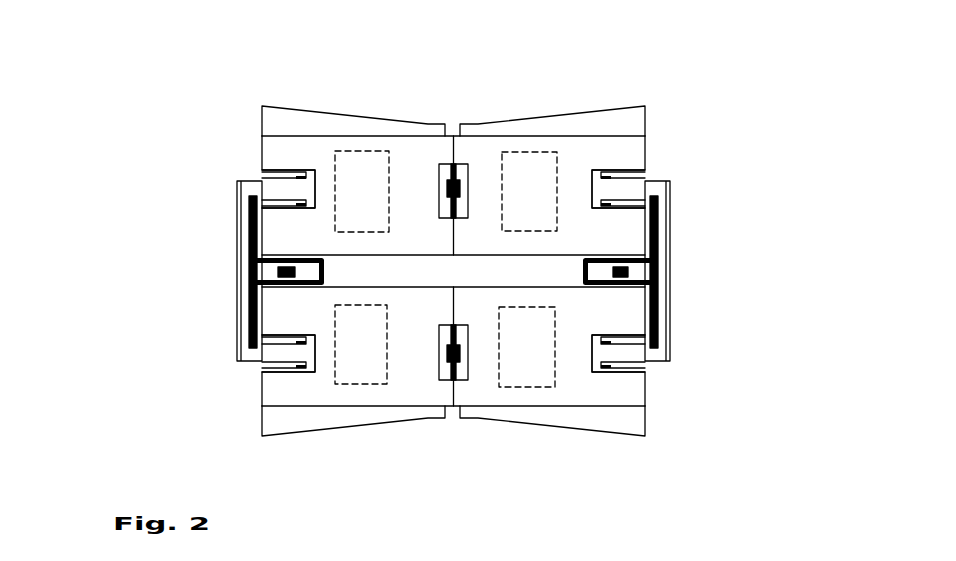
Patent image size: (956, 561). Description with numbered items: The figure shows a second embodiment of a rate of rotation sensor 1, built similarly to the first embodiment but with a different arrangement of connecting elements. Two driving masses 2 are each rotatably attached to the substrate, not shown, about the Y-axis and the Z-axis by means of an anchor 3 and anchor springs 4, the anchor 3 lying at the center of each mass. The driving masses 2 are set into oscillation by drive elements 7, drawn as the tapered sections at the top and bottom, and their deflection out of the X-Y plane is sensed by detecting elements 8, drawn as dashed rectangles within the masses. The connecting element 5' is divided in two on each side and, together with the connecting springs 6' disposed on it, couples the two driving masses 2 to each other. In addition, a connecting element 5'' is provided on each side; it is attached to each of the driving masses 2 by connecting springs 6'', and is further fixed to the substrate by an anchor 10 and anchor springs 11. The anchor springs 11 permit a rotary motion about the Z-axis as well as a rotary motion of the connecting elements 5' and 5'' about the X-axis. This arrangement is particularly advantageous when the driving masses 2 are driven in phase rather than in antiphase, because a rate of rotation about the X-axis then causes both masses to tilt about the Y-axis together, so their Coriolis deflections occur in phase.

The rate of rotation sensor 1 is at (700, 127).
The driving masses 2 is at (683, 472).
The anchor 3 is at (448, 184).
The anchor springs 4 is at (458, 200).
The connecting element 5' is at (437, 271).
The additional connecting element 5'' is at (450, 280).
The connecting springs 6' is at (446, 266).
The connecting springs 6'' is at (463, 254).
The drive elements 7 is at (277, 120).
The detecting elements 8 is at (352, 168).
The anchor 10 is at (293, 283).
The anchor springs 11 is at (262, 270).